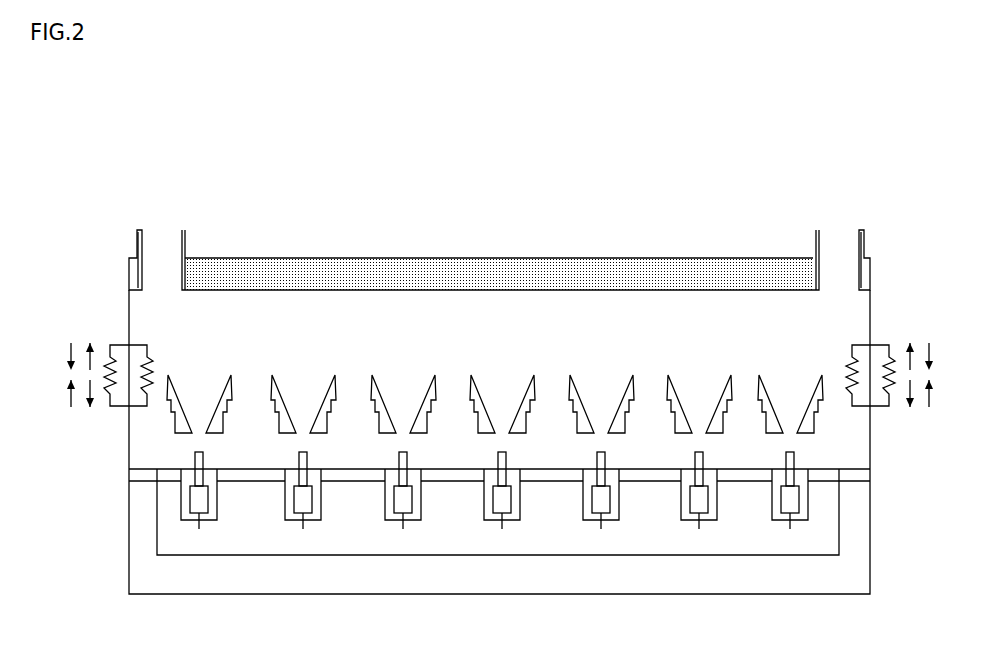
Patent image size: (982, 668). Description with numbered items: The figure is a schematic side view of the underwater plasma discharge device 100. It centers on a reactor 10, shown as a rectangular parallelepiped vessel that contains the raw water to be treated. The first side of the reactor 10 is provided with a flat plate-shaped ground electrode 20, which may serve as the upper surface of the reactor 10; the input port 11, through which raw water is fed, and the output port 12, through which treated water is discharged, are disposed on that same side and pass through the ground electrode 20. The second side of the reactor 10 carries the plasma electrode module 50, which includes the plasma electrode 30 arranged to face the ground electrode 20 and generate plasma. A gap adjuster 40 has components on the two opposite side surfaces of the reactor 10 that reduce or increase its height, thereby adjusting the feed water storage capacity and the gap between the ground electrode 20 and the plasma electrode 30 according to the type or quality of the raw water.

The underwater plasma discharge device 100 is at (715, 126).
The reactor 10 is at (870, 313).
The input port 11 is at (183, 233).
The output port 12 is at (863, 233).
The ground electrode 20 is at (537, 275).
The plasma electrode 30 is at (805, 500).
The gap adjuster 40 is at (120, 345).
The plasma electrode module 50 is at (758, 556).